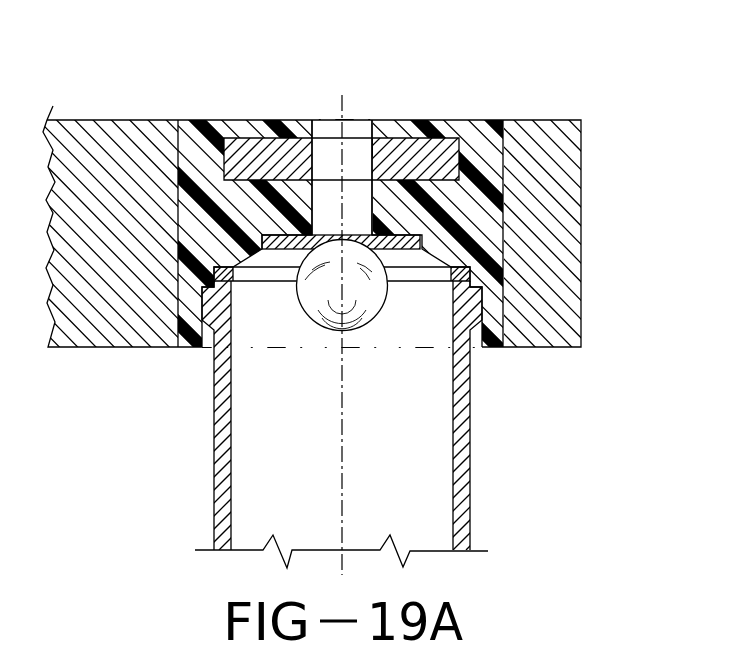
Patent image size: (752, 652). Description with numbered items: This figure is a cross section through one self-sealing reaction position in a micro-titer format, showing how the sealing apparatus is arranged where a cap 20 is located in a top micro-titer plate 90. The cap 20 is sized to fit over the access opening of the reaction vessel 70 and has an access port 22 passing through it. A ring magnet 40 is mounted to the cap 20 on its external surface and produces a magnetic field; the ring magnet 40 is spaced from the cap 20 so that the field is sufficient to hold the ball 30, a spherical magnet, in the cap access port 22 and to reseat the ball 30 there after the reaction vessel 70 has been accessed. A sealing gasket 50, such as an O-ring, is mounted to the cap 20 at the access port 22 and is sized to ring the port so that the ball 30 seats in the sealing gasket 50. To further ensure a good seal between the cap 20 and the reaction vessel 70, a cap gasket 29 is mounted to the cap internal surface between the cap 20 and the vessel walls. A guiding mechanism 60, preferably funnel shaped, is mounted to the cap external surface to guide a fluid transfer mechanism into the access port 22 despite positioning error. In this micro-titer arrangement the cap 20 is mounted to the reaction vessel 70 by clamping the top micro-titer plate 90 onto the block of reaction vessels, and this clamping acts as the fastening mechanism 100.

The cap 20 is at (466, 121).
The access port 22 is at (322, 209).
The cap gasket 29 is at (452, 282).
The ball 30 is at (362, 317).
The ring magnet 40 is at (238, 160).
The sealing gasket 50 is at (418, 236).
The guiding mechanism 60 is at (395, 134).
The reaction vessel 70 is at (465, 492).
The top micro-titer plate 90 is at (560, 155).
The fastening mechanism 100 is at (198, 355).